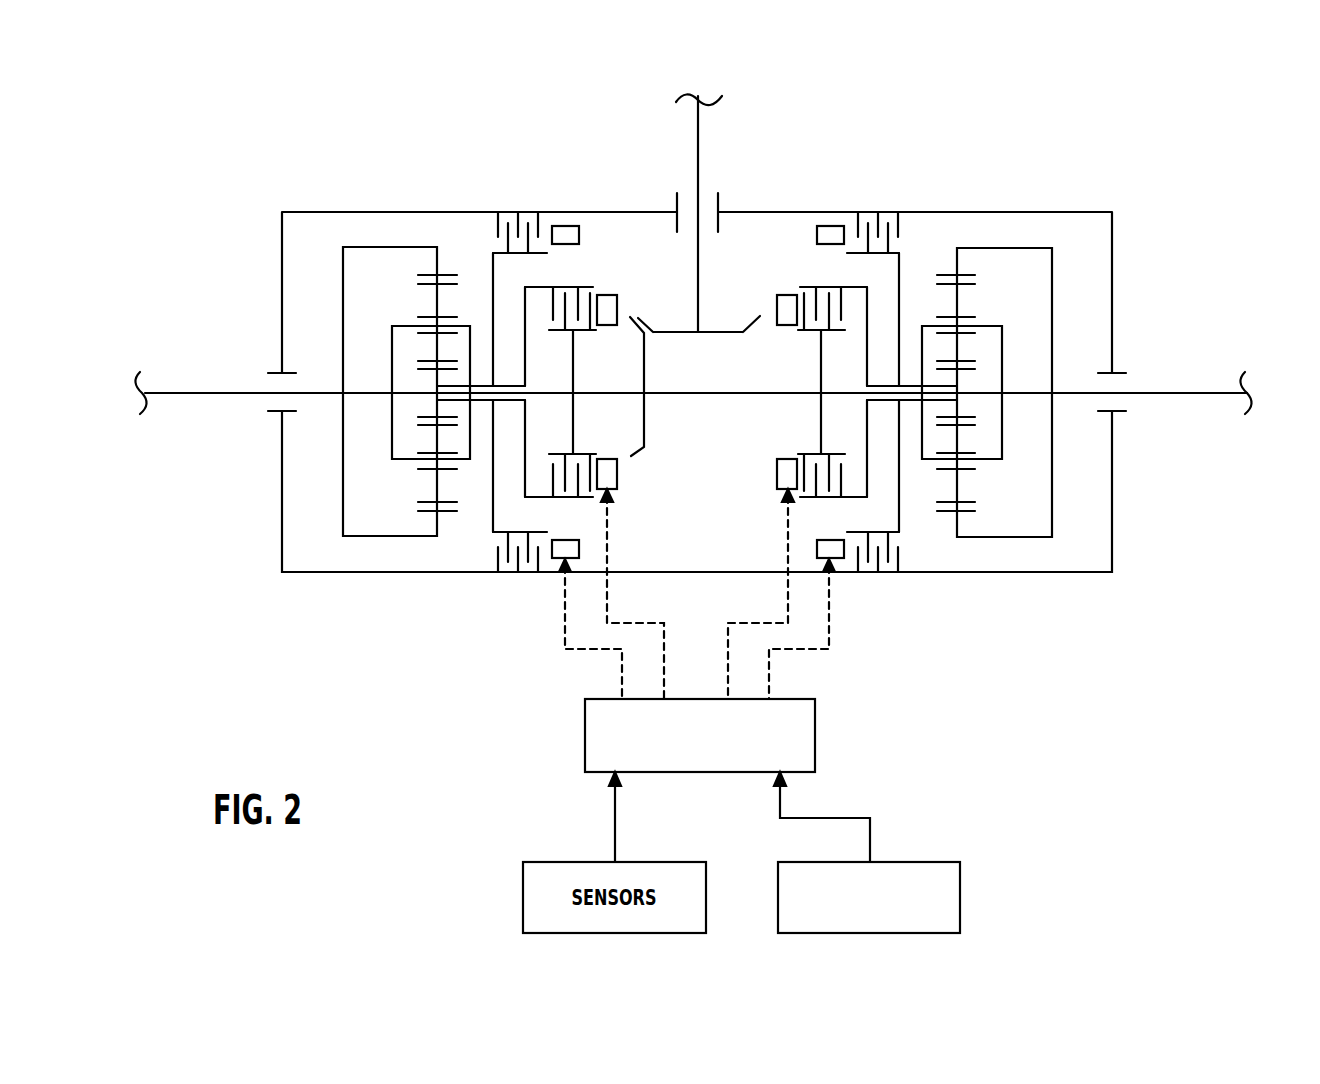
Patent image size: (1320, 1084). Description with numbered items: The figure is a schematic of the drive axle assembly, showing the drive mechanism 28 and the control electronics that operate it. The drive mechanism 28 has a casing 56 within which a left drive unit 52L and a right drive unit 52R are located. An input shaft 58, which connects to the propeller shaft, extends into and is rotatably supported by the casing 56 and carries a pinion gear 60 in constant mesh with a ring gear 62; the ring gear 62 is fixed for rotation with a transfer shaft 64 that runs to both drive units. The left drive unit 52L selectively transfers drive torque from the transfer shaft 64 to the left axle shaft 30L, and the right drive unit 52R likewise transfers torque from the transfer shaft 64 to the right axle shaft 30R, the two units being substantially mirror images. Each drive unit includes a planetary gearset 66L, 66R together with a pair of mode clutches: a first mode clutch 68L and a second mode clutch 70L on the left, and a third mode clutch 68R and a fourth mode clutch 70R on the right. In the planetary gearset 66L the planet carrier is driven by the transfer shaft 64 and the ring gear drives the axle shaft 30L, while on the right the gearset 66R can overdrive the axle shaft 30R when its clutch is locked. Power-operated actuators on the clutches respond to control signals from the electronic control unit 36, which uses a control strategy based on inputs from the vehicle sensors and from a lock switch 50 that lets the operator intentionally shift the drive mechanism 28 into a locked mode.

The drive mechanism 28 is at (940, 116).
The left axle shaft 30L is at (207, 393).
The right axle shaft 30R is at (1173, 393).
The electronic control unit 36 is at (585, 733).
The lock switch 50 is at (960, 884).
The left drive unit 52L is at (437, 556).
The right drive unit 52R is at (940, 546).
The casing 56 is at (1063, 212).
The input shaft 58 is at (698, 130).
The pinion gear 60 is at (759, 318).
The ring gear 62 is at (645, 362).
The transfer shaft 64 is at (721, 395).
The planetary gearset 66L is at (453, 259).
The planetary gearset 66R is at (947, 249).
The first mode clutch 68L is at (548, 219).
The third mode clutch 68R is at (809, 223).
The second mode clutch 70L is at (586, 286).
The fourth mode clutch 70R is at (777, 291).